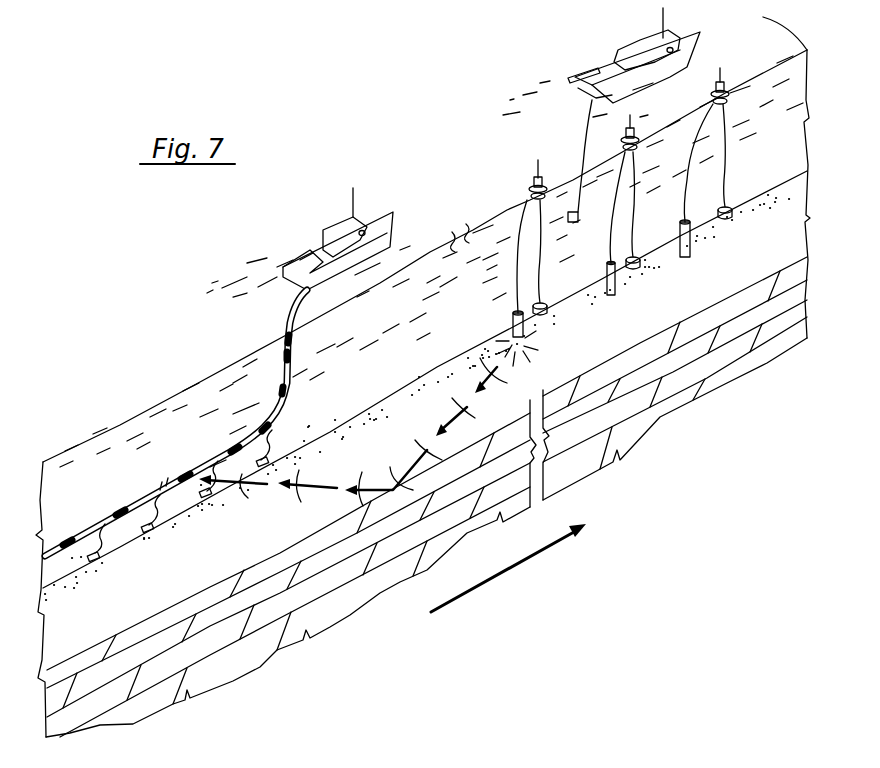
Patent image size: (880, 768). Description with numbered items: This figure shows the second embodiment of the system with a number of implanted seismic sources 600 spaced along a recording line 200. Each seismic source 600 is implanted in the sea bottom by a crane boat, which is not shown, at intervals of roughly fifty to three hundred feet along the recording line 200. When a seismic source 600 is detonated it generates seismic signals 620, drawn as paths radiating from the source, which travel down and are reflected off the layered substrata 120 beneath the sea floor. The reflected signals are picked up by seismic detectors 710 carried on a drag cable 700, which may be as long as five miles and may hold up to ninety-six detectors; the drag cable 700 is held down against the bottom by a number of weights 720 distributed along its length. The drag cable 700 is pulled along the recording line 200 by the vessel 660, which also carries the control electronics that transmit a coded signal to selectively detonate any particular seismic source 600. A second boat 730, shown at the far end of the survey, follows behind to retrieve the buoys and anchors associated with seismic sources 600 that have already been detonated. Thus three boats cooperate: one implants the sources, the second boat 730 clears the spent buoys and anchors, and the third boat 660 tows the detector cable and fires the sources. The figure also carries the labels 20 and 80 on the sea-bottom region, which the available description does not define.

The sea bed region 20 is at (277, 532).
The sea floor 80 is at (360, 412).
The substrata 120 is at (637, 427).
The recording line 200 is at (530, 560).
The seismic source 600 is at (524, 330).
The seismic signals 620 is at (300, 469).
The vessel 660 is at (320, 232).
The drag cable 700 is at (285, 402).
The seismic detectors 710 is at (68, 539).
The weights 720 is at (100, 559).
The second boat 730 is at (694, 32).